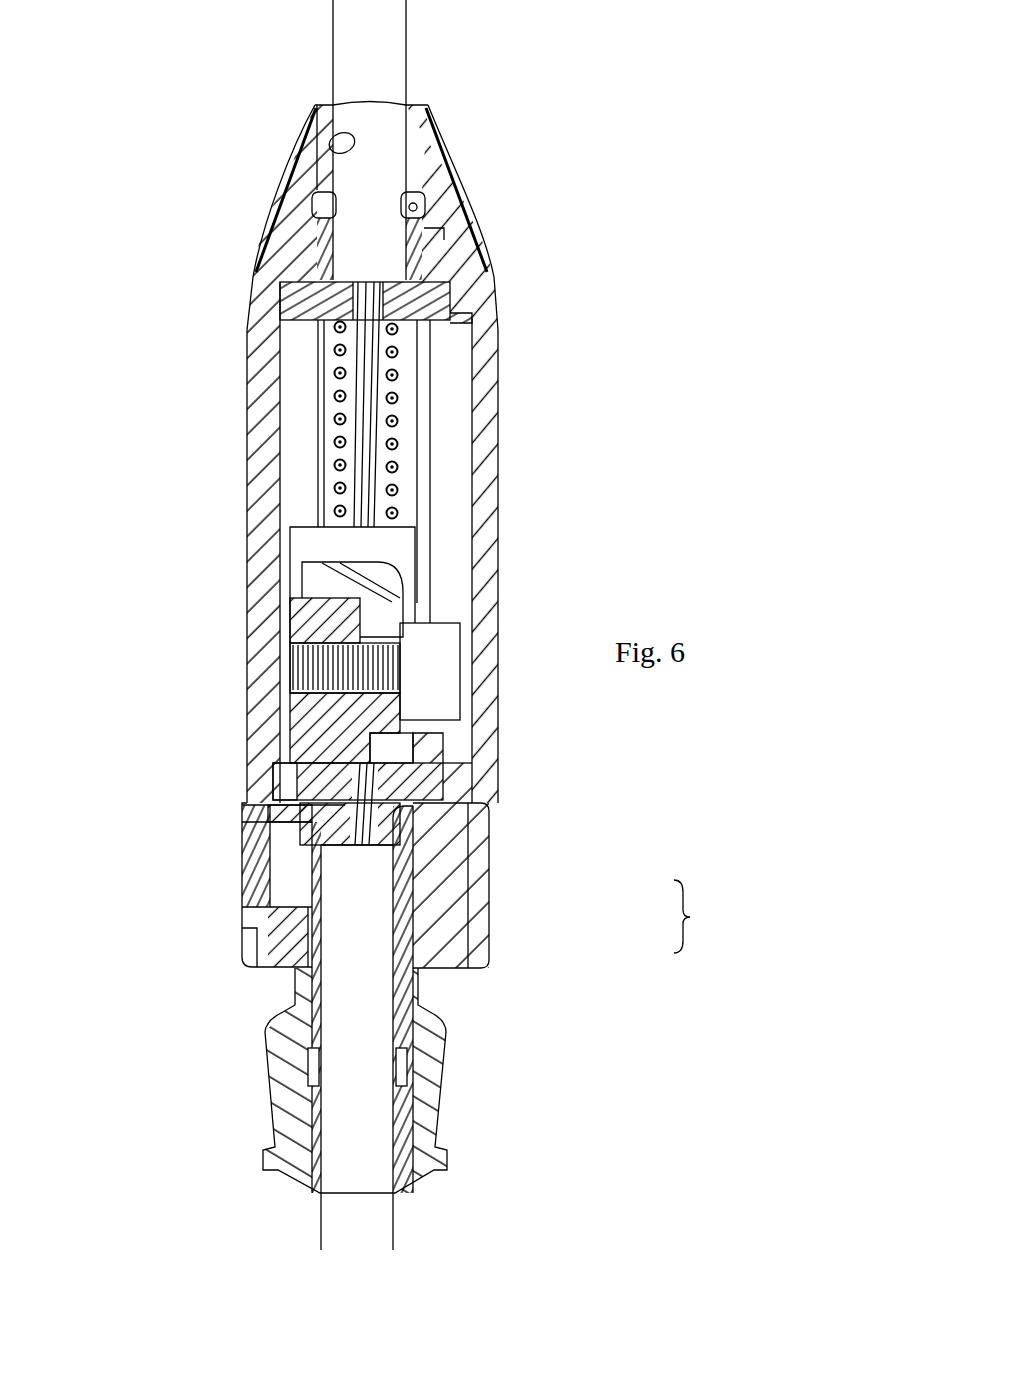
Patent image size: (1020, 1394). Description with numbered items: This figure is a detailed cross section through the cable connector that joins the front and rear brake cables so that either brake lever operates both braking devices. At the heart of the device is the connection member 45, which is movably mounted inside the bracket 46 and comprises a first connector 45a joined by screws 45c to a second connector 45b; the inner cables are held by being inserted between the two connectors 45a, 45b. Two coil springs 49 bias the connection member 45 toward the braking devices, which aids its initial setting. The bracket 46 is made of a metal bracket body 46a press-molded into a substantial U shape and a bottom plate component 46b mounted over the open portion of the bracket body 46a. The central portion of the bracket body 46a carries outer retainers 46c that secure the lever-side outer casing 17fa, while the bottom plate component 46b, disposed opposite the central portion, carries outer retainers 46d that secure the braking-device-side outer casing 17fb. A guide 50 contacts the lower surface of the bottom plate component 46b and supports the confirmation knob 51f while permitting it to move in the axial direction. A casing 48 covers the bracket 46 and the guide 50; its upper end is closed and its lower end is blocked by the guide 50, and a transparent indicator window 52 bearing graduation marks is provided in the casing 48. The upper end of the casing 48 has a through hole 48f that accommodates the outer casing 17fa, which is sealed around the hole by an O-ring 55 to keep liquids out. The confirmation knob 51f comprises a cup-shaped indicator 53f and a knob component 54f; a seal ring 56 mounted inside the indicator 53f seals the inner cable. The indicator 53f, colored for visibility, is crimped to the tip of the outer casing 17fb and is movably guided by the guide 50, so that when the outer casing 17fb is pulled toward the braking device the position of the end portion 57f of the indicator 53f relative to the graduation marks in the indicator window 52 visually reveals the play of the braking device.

The outer casing 17fa is at (393, 67).
The through hole 48f is at (322, 135).
The O-ring 55 is at (417, 207).
The bracket 46 is at (437, 295).
The bracket body 46a is at (463, 318).
The outer retainer 46c is at (430, 232).
The casing 48 is at (498, 373).
The coil spring 49 is at (395, 430).
The connection member 45 is at (390, 563).
The first connector 45a is at (315, 620).
The second connector 45b is at (392, 603).
The screw 45c is at (443, 660).
The end portion 57f is at (282, 711).
The seal ring 56 is at (300, 815).
The bottom plate component 46b is at (427, 787).
The outer retainer 46d is at (437, 815).
The guide 50 is at (443, 858).
The indicator window 52 is at (242, 885).
The indicator 53f is at (413, 912).
The knob component 54f is at (437, 1060).
The confirmation knob 51f is at (745, 916).
The outer casing 17fb is at (340, 1145).